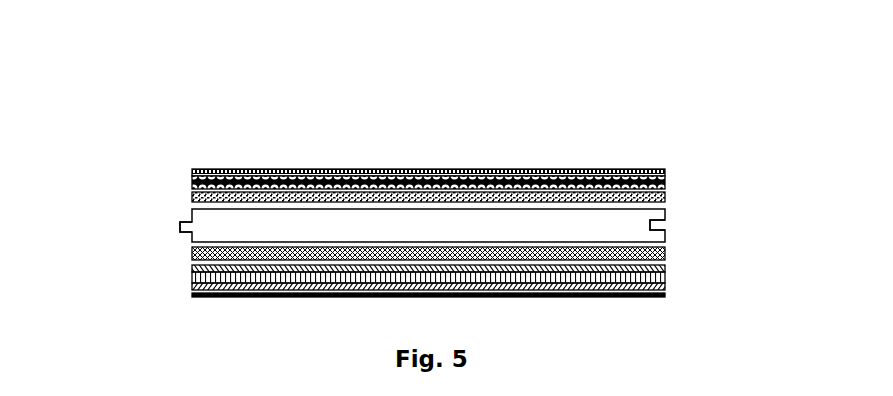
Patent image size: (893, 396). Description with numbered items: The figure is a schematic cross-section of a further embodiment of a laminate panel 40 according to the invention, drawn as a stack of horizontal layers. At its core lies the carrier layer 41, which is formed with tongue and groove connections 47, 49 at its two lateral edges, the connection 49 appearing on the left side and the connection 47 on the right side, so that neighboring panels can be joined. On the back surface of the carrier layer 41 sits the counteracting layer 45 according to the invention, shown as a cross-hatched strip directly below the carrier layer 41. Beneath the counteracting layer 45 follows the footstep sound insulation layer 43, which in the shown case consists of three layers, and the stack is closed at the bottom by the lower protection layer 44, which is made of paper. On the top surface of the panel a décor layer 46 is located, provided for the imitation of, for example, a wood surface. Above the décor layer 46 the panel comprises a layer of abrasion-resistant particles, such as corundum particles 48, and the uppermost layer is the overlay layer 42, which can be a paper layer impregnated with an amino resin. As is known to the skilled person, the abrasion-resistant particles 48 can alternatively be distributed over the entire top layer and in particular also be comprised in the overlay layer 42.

The laminate panel 40 is at (516, 131).
The carrier layer 41 is at (638, 219).
The overlay layer 42 is at (217, 170).
The footstep sound insulation layer 43 is at (669, 266).
The lower protection layer 44 is at (610, 297).
The counteracting layer 45 is at (191, 254).
The décor layer 46 is at (191, 197).
The tongue and groove connection 47 is at (655, 225).
The corundum particle 48 is at (191, 183).
The tongue and groove connection 49 is at (180, 226).